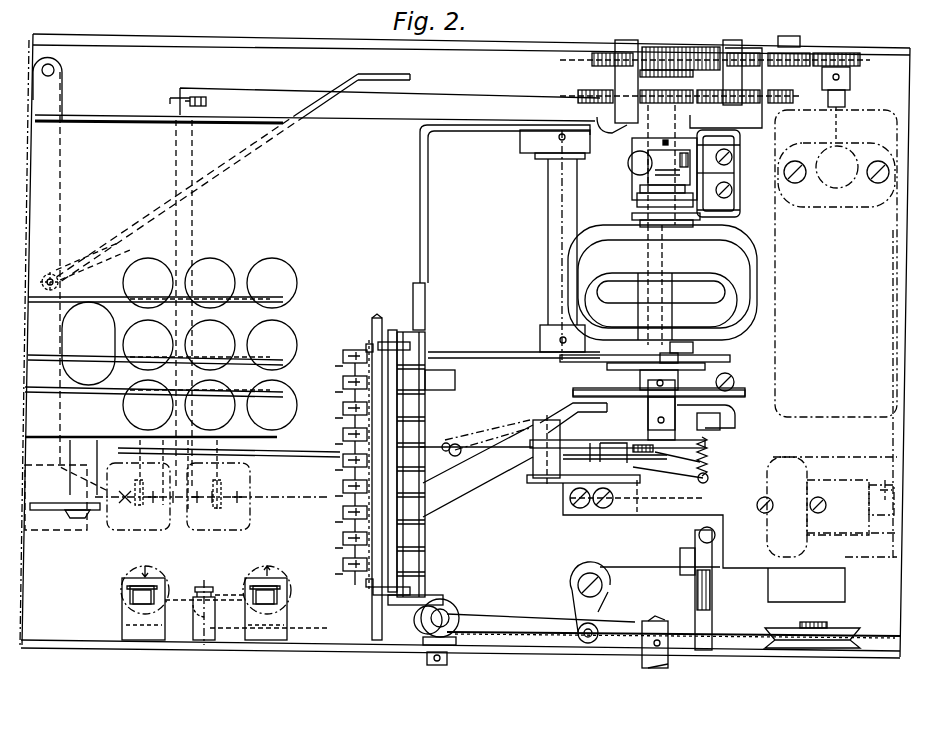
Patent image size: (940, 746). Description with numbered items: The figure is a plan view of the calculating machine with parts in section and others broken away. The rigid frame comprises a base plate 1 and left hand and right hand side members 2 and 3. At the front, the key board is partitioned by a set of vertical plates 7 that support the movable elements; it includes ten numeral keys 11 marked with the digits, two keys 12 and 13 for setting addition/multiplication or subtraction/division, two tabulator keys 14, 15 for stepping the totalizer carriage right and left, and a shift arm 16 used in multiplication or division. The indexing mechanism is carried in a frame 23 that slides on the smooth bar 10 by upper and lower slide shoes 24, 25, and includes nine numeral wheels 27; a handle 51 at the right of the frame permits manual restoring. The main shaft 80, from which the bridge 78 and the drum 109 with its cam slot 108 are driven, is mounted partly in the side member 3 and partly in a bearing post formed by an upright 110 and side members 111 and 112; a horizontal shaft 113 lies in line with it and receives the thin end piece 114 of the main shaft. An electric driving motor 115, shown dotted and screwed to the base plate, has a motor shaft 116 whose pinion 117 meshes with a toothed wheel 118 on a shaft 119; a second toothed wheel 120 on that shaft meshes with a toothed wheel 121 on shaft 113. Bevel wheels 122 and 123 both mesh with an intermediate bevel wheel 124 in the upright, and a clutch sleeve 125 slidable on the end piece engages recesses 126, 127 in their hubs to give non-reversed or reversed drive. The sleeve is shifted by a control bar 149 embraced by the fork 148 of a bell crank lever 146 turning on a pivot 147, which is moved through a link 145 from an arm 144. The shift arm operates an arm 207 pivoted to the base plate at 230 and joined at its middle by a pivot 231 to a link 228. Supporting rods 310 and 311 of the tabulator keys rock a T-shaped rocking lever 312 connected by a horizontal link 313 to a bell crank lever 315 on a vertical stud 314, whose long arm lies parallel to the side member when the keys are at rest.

The base plate 1 is at (528, 598).
The left hand side member 2 is at (283, 41).
The right hand side member 3 is at (313, 650).
The vertical plates 7 is at (182, 377).
The bar 10 is at (377, 318).
The numeral keys 11 is at (179, 333).
The key 12 is at (160, 530).
The key 13 is at (232, 530).
The tabulator key 14 is at (122, 572).
The tabulator key 15 is at (283, 570).
The shift arm 16 is at (65, 510).
The frame 23 is at (397, 565).
The upper slide shoe 24 is at (365, 464).
The lower slide shoe 25 is at (347, 458).
The numeral wheels 27 is at (337, 465).
The handle 51 is at (415, 603).
The bridge 78 is at (428, 246).
The main shaft 80 is at (662, 490).
The cam slot 108 is at (720, 245).
The drum 109 is at (745, 303).
The upright 110 is at (700, 175).
The side member 111 is at (690, 130).
The side member 112 is at (705, 215).
The horizontal shaft 113 is at (665, 92).
The end piece 114 is at (655, 190).
The electric driving motor 115 is at (775, 333).
The motor shaft 116 is at (850, 87).
The pinion 117 is at (858, 62).
The toothed wheel 118 is at (748, 55).
The shaft 119 is at (735, 78).
The toothed wheel 120 is at (783, 92).
The toothed wheel 121 is at (593, 90).
The bevel wheel 122 is at (620, 122).
The bevel wheel 123 is at (660, 200).
The intermediate bevel wheel 124 is at (705, 150).
The clutch sleeve 125 is at (645, 160).
The recesses 126 is at (660, 142).
The recesses 127 is at (660, 207).
The arm 144 is at (197, 97).
The link 145 is at (258, 92).
The bell crank lever 146 is at (640, 170).
The pivot 147 is at (652, 180).
The fork 148 is at (732, 190).
The control bar 149 is at (732, 160).
The arm 207 is at (62, 165).
The link 228 is at (258, 150).
The pivot 230 is at (58, 70).
The pivot 231 is at (62, 262).
The supporting rod 310 is at (128, 592).
The supporting rod 311 is at (290, 592).
The T-shaped rocking lever 312 is at (230, 595).
The horizontal link 313 is at (493, 620).
The vertical stud 314 is at (592, 578).
The bell crank lever 315 is at (648, 567).